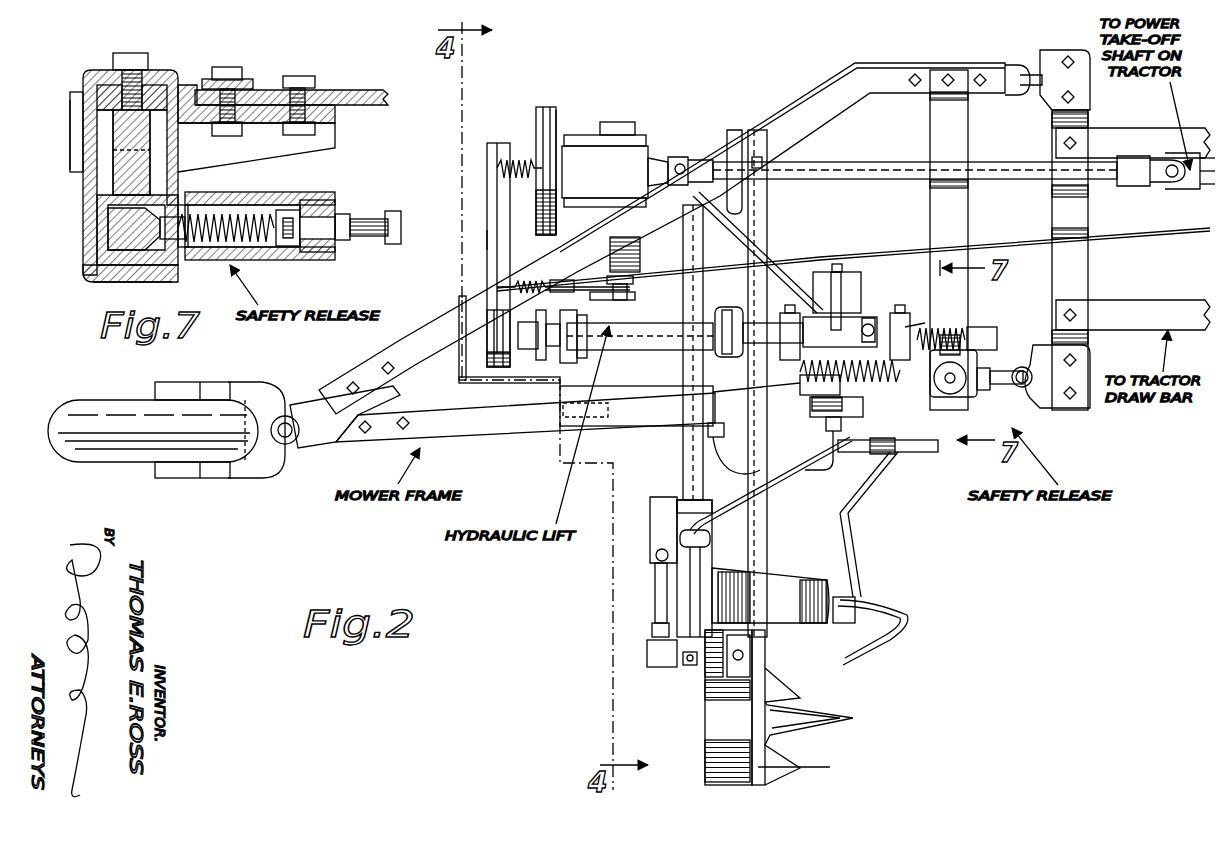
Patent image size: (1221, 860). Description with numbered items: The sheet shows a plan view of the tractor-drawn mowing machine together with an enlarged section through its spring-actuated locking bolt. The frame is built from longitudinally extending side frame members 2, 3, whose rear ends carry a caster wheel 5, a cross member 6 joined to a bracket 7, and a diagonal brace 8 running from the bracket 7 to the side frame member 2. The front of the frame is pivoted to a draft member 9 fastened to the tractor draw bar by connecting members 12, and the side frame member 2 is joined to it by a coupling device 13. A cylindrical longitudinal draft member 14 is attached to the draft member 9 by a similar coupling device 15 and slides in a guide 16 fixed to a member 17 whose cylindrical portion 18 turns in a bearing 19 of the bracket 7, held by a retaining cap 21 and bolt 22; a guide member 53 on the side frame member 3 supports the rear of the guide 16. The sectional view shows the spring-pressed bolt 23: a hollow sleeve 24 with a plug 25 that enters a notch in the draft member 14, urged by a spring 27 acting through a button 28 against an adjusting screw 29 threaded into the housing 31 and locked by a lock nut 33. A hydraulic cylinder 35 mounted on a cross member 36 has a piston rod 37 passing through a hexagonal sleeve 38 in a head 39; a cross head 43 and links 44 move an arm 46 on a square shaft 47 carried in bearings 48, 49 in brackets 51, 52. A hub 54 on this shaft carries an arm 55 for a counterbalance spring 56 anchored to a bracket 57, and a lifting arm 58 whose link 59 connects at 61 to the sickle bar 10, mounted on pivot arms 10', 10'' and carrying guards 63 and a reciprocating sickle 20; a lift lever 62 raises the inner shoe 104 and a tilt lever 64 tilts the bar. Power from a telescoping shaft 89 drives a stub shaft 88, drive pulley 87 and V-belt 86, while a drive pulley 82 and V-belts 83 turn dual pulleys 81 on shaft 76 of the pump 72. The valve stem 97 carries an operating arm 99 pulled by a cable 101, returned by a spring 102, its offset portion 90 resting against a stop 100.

In FIG. 2, the side frame member 2 is at (812, 108).
In FIG. 7, the side frame member 3 is at (76, 158).
In FIG. 2, the side frame member 3 is at (468, 424).
In FIG. 2, the caster wheel 5 is at (105, 445).
In FIG. 7, the cross member 6 is at (372, 88).
In FIG. 2, the cross member 6 is at (960, 125).
In FIG. 7, the bracket 7 is at (184, 88).
In FIG. 2, the bracket 7 is at (968, 358).
In FIG. 2, the diagonal brace 8 is at (778, 240).
In FIG. 2, the draft member 9 is at (1086, 215).
In FIG. 2, the sickle bar 10 is at (738, 641).
In FIG. 2, the pivot arm 10' is at (636, 419).
In FIG. 2, the pivot arm 10'' is at (868, 577).
In FIG. 2, the connecting member 12 is at (1128, 136).
In FIG. 2, the coupling device 13 is at (1021, 64).
In FIG. 7, the longitudinal draft member 14 is at (108, 222).
In FIG. 2, the longitudinal draft member 14 is at (990, 392).
In FIG. 2, the coupling device 15 is at (1030, 402).
In FIG. 7, the guide 16 is at (150, 226).
In FIG. 2, the guide 16 is at (958, 398).
In FIG. 7, the member 17 is at (148, 280).
In FIG. 7, the cylindrical portion 18 is at (104, 146).
In FIG. 7, the bearing 19 is at (104, 124).
In FIG. 2, the sickle 20 is at (832, 767).
In FIG. 7, the retaining cap 21 is at (164, 72).
In FIG. 2, the retaining cap 21 is at (950, 395).
In FIG. 7, the bolt 22 is at (130, 58).
In FIG. 2, the bolt 22 is at (940, 378).
In FIG. 7, the spring-pressed bolt 23 is at (182, 250).
In FIG. 7, the hollow sleeve 24 is at (253, 247).
In FIG. 7, the plug 25 is at (168, 230).
In FIG. 7, the spring 27 is at (246, 214).
In FIG. 7, the button 28 is at (295, 212).
In FIG. 7, the adjusting screw 29 is at (372, 243).
In FIG. 7, the housing 31 is at (323, 202).
In FIG. 7, the lock nut 33 is at (348, 212).
In FIG. 2, the hydraulic cylinder 35 is at (672, 351).
In FIG. 2, the cross member 36 is at (641, 248).
In FIG. 2, the piston rod 37 is at (868, 322).
In FIG. 2, the sleeve 38 is at (769, 322).
In FIG. 2, the head 39 is at (738, 318).
In FIG. 2, the cross head 43 is at (920, 327).
In FIG. 2, the link 44 is at (792, 312).
In FIG. 2, the arm 46 is at (842, 290).
In FIG. 2, the square shaft 47 is at (848, 282).
In FIG. 2, the bearing 48 is at (836, 268).
In FIG. 2, the bearing 49 is at (845, 452).
In FIG. 2, the bracket 51 is at (855, 280).
In FIG. 2, the bracket 52 is at (848, 418).
In FIG. 2, the guide member 53 is at (832, 442).
In FIG. 2, the hub 54 is at (806, 386).
In FIG. 2, the arm 55 is at (772, 386).
In FIG. 2, the spring 56 is at (957, 331).
In FIG. 7, the bracket 57 is at (244, 78).
In FIG. 2, the bracket 57 is at (988, 340).
In FIG. 2, the lifting arm 58 is at (724, 433).
In FIG. 2, the link 59 is at (745, 455).
In FIG. 2, the connection 61 is at (742, 470).
In FIG. 2, the lift lever 62 is at (816, 418).
In FIG. 2, the guards 63 is at (813, 720).
In FIG. 2, the tilt lever 64 is at (893, 458).
In FIG. 2, the pump 72 is at (556, 364).
In FIG. 2, the shaft 76 is at (518, 340).
In FIG. 2, the dual pulleys 81 is at (487, 352).
In FIG. 2, the drive pulley 82 is at (489, 144).
In FIG. 2, the V-belt 83 is at (487, 238).
In FIG. 2, the V-belt 86 is at (544, 112).
In FIG. 2, the drive pulley 87 is at (559, 110).
In FIG. 2, the stub shaft 88 is at (660, 158).
In FIG. 2, the telescoping shaft 89 is at (876, 168).
In FIG. 2, the offset portion 90 is at (633, 282).
In FIG. 2, the operating stem 97 is at (600, 294).
In FIG. 2, the operating arm 99 is at (562, 281).
In FIG. 2, the stop 100 is at (627, 296).
In FIG. 2, the cable 101 is at (1112, 232).
In FIG. 2, the spring 102 is at (532, 282).
In FIG. 2, the inner shoe 104 is at (865, 612).